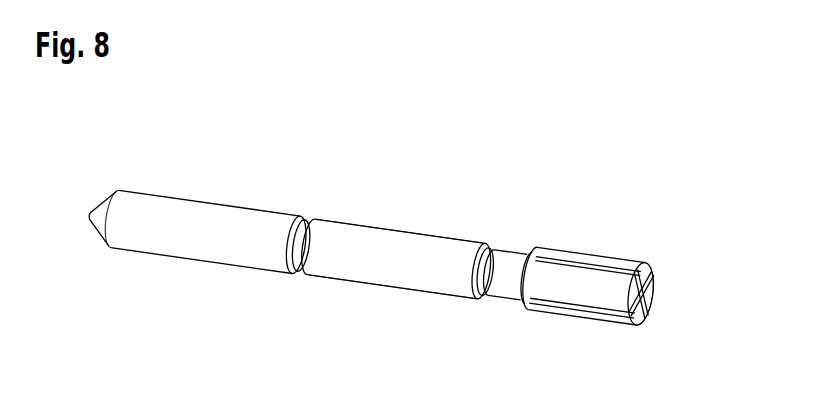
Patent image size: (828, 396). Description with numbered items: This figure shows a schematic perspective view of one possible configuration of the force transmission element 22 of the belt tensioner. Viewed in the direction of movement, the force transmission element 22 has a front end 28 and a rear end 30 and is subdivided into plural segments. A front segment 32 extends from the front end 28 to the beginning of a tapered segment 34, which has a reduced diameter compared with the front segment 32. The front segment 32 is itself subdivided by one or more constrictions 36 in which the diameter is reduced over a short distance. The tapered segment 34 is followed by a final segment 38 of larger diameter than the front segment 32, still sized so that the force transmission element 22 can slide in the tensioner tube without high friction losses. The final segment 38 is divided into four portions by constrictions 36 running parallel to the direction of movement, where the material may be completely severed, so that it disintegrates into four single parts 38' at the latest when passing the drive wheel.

The force transmission element 22 is at (438, 170).
The front end 28 is at (92, 181).
The rear end 30 is at (660, 197).
The front segment 32 is at (105, 258).
The tapered segment 34 is at (483, 317).
The constriction 36 is at (312, 217).
The final segment 38 is at (582, 312).
The single part 38' is at (615, 267).